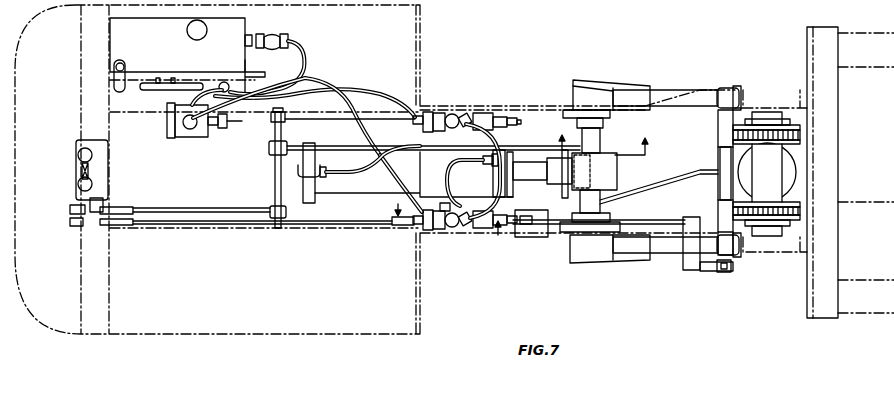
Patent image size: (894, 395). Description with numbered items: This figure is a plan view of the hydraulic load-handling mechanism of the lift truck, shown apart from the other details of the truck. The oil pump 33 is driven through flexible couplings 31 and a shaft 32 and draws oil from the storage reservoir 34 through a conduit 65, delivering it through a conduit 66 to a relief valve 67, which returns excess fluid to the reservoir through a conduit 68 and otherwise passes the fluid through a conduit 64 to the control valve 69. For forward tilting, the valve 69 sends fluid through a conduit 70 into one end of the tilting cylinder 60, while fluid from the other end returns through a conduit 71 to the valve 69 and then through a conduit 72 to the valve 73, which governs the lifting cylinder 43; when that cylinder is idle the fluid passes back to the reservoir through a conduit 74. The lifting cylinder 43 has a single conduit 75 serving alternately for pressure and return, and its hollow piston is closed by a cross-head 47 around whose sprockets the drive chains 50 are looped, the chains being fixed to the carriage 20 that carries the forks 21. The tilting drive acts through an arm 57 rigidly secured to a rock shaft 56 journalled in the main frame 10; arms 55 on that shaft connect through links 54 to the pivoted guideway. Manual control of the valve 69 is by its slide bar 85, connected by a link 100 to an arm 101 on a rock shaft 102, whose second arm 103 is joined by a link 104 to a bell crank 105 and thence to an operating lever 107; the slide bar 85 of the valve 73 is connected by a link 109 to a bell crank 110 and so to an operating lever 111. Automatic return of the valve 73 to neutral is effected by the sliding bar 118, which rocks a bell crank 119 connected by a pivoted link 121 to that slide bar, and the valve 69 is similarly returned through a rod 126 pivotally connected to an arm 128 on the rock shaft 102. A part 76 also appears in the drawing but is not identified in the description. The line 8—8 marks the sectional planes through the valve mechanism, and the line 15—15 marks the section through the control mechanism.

The main frame 10 is at (152, 336).
The carriage 20 is at (850, 172).
The forks 21 is at (850, 67).
The flexible couplings 31 is at (221, 127).
The shaft 32 is at (233, 122).
The oil pump 33 is at (186, 136).
The storage reservoir 34 is at (199, 55).
The cylinder 43 is at (790, 172).
The cross-head 47 is at (747, 182).
The drive chains 50 is at (800, 128).
The links 54 is at (673, 97).
The arms 55 is at (607, 93).
The rock shaft 56 is at (600, 207).
The arm 57 is at (617, 172).
The cylinder 60 is at (354, 186).
The conduit 64 is at (312, 79).
The conduit 65 is at (309, 57).
The conduit 66 is at (207, 83).
The relief valve 67 is at (224, 81).
The conduit 68 is at (152, 89).
The control valve 69 is at (478, 113).
The conduit 70 is at (357, 170).
The conduit 71 is at (462, 163).
The conduit 72 is at (498, 182).
The valve 73 is at (477, 232).
The conduit 74 is at (384, 181).
The conduit 75 is at (462, 203).
The bracket 76 is at (524, 238).
The slide bar 85 is at (414, 115).
The link 100 is at (362, 114).
The arm 101 is at (270, 128).
The rock shaft 102 is at (273, 168).
The second arm 103 is at (274, 205).
The link 104 is at (218, 208).
The bell crank 105 is at (80, 205).
The operating lever 107 is at (93, 155).
The link 109 is at (353, 229).
The bell crank 110 is at (97, 228).
The operating lever 111 is at (93, 184).
The bar 118 is at (732, 271).
The bell crank 119 is at (700, 272).
The pivoted link 121 is at (659, 219).
The rod 126 is at (553, 131).
The arm 128 is at (269, 151).
The section line 8 is at (445, 230).
The section line 15 is at (609, 138).